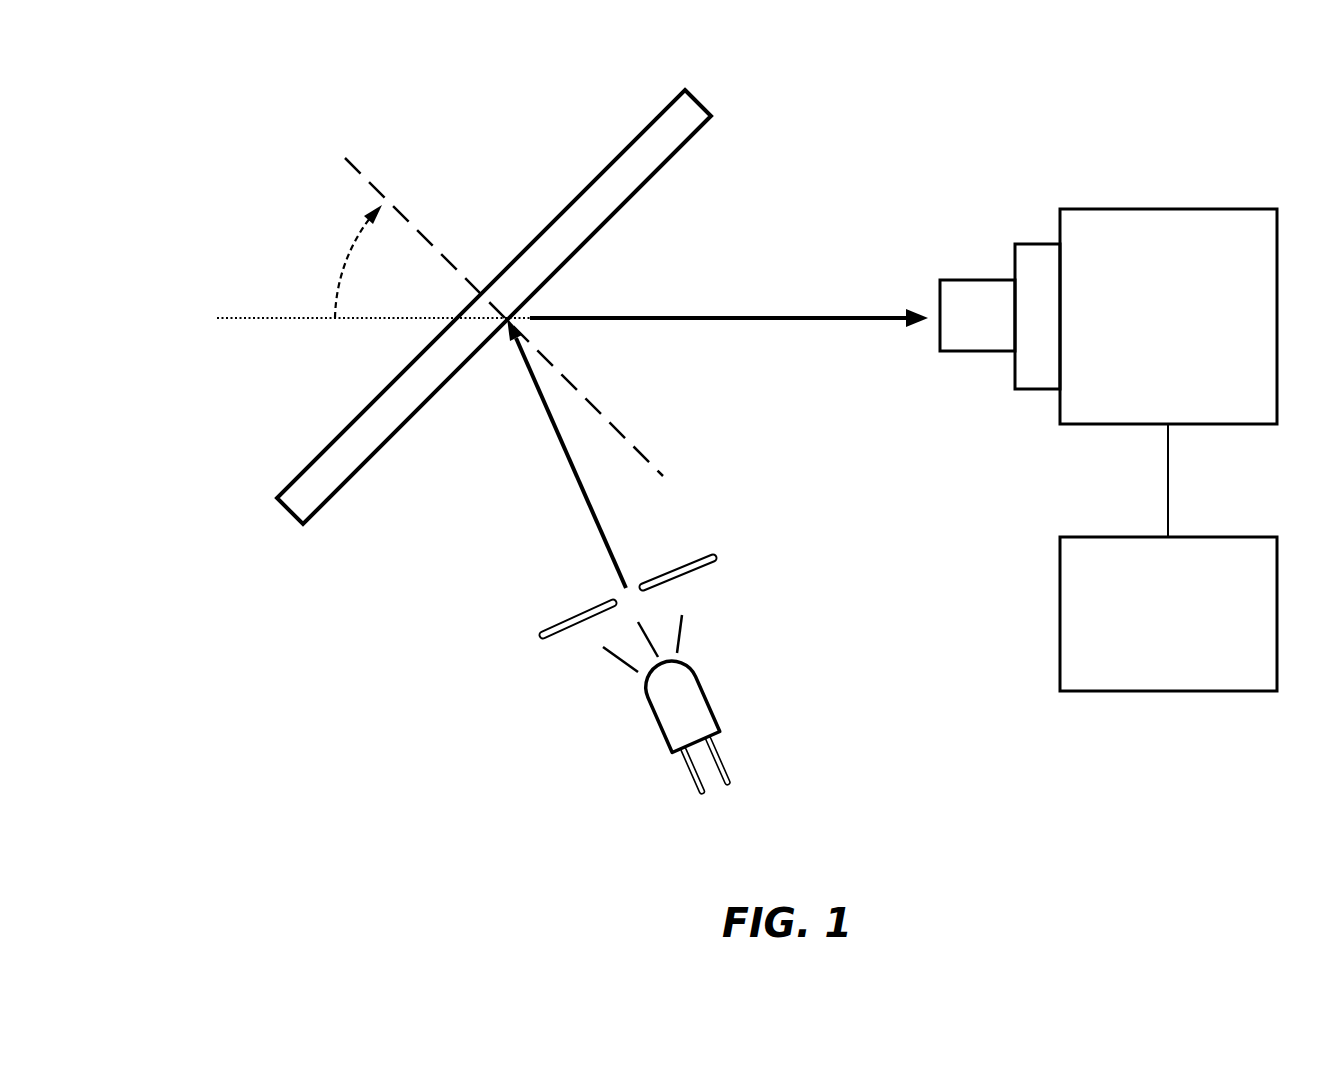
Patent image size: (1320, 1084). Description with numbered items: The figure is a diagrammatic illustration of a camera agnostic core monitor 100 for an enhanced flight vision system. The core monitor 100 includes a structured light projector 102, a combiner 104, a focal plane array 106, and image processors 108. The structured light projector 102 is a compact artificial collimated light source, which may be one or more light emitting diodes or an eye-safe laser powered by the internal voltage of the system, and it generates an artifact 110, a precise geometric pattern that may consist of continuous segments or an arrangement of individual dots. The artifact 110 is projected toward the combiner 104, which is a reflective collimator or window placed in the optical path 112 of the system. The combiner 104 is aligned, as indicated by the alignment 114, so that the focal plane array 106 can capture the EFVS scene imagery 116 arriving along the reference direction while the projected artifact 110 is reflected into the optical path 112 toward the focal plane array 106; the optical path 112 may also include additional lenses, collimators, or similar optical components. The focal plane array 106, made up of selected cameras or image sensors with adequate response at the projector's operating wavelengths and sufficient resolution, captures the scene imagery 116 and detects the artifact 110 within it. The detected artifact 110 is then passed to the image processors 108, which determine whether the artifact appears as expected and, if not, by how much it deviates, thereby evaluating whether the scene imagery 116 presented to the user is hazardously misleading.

The camera agnostic core monitor 100 is at (190, 135).
The structured light projector 102 is at (655, 720).
The combiner 104 is at (612, 178).
The focal plane array 106 is at (1147, 336).
The image processors 108 is at (1147, 633).
The artifact 110 is at (577, 487).
The optical path 112 is at (714, 295).
The alignment 114 is at (345, 258).
The EFVS scene imagery 116 is at (245, 318).